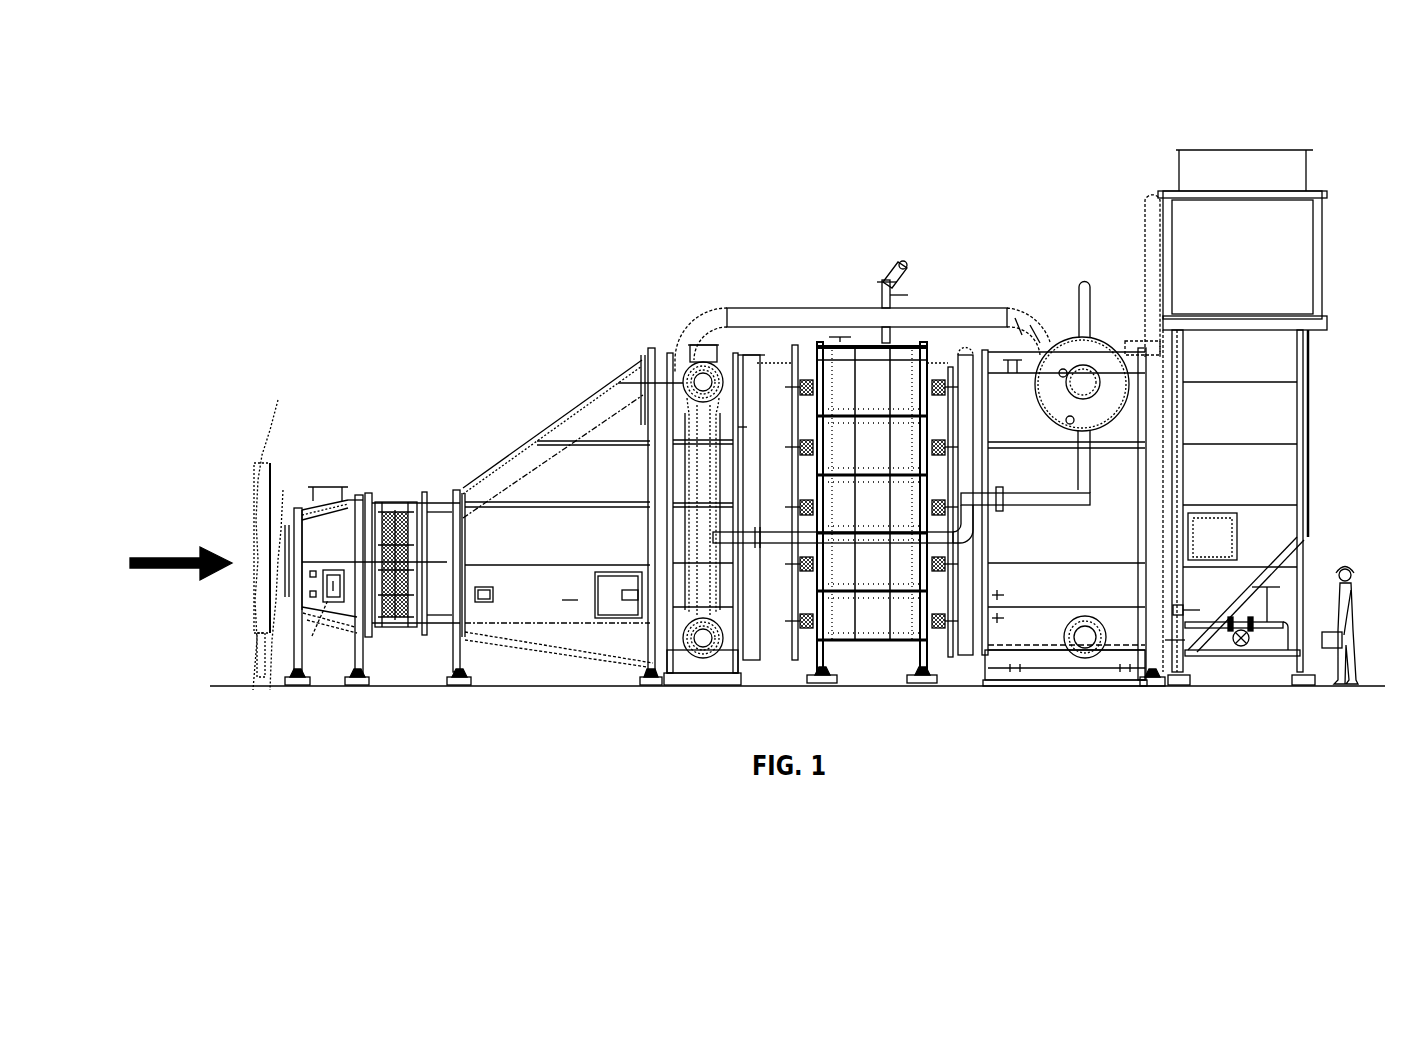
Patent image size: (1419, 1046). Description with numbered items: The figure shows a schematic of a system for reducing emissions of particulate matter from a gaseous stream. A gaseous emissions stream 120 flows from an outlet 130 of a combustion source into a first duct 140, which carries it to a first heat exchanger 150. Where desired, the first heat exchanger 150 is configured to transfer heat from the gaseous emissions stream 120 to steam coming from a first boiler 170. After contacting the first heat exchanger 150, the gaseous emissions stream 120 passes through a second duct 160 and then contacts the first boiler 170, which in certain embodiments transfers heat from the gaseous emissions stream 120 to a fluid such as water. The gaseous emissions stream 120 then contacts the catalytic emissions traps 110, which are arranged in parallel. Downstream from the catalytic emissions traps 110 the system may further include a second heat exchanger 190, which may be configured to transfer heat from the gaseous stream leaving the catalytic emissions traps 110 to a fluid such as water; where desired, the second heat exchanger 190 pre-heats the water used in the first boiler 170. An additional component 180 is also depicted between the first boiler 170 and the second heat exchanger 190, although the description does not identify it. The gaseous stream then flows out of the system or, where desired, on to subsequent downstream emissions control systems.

The catalytic emissions traps 110 is at (868, 622).
The gaseous emissions stream 120 is at (153, 543).
The outlet 130 is at (277, 530).
The first duct 140 is at (329, 530).
The first heat exchanger 150 is at (395, 620).
The second duct 160 is at (545, 482).
The first boiler 170 is at (685, 357).
The vessel 180 is at (1075, 360).
The second heat exchanger 190 is at (1276, 255).